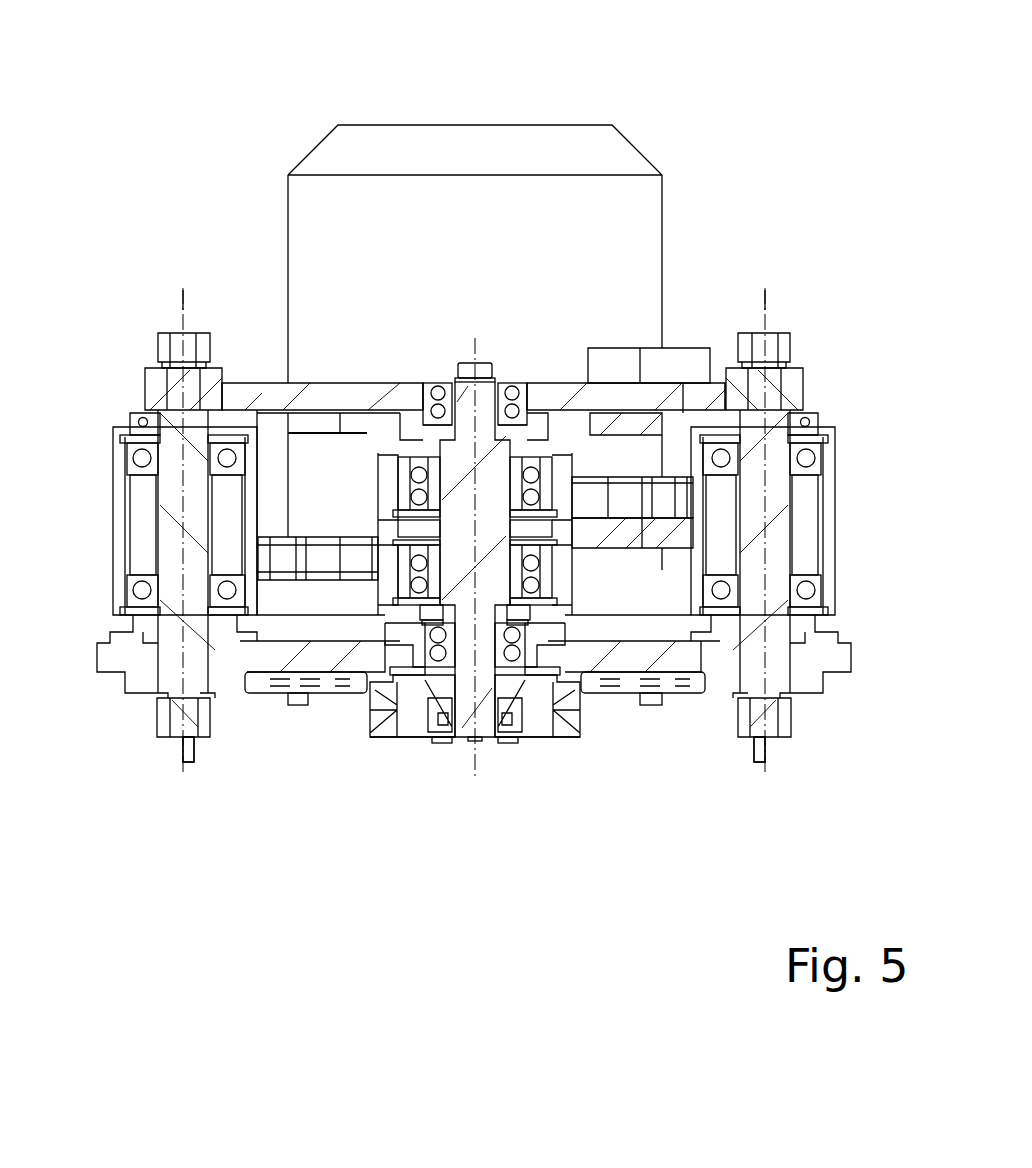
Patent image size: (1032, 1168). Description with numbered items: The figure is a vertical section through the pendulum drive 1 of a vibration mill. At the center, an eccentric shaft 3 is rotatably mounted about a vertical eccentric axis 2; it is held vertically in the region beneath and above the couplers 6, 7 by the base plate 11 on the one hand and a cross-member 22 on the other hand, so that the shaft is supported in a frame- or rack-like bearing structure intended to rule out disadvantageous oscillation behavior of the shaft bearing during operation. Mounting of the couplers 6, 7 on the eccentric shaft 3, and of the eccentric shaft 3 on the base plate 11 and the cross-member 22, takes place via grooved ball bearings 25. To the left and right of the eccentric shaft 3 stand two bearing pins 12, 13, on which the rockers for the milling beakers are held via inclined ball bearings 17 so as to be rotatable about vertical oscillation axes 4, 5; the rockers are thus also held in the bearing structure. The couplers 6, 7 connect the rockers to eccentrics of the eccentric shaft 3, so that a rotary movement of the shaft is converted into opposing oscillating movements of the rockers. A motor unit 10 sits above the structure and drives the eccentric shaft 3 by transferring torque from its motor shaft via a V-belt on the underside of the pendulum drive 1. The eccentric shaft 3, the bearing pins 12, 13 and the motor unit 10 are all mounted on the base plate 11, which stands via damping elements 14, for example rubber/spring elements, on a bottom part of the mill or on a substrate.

The pendulum drive 1 is at (803, 113).
The eccentric axis 2 is at (475, 365).
The eccentric shaft 3 is at (464, 440).
The oscillation axis 4 is at (182, 299).
The oscillation axis 5 is at (767, 302).
The coupler 6 is at (333, 545).
The coupler 7 is at (623, 497).
The motor unit 10 is at (558, 212).
The base plate 11 is at (635, 655).
The bearing pin 12 is at (172, 540).
The bearing pin 13 is at (777, 538).
The damping elements 14 is at (207, 735).
The ball bearings 17 is at (135, 466).
The cross-member 22 is at (345, 400).
The grooved ball bearings 25 is at (423, 383).